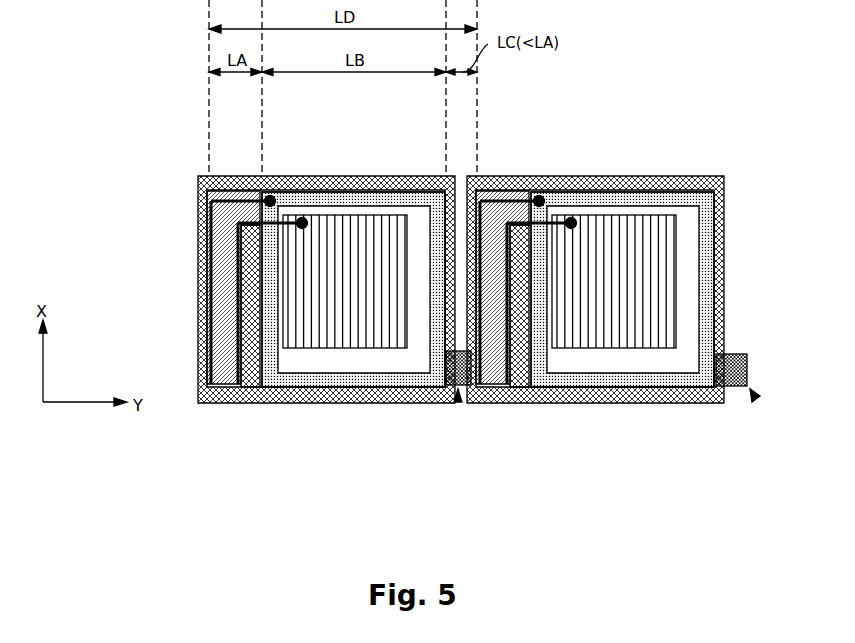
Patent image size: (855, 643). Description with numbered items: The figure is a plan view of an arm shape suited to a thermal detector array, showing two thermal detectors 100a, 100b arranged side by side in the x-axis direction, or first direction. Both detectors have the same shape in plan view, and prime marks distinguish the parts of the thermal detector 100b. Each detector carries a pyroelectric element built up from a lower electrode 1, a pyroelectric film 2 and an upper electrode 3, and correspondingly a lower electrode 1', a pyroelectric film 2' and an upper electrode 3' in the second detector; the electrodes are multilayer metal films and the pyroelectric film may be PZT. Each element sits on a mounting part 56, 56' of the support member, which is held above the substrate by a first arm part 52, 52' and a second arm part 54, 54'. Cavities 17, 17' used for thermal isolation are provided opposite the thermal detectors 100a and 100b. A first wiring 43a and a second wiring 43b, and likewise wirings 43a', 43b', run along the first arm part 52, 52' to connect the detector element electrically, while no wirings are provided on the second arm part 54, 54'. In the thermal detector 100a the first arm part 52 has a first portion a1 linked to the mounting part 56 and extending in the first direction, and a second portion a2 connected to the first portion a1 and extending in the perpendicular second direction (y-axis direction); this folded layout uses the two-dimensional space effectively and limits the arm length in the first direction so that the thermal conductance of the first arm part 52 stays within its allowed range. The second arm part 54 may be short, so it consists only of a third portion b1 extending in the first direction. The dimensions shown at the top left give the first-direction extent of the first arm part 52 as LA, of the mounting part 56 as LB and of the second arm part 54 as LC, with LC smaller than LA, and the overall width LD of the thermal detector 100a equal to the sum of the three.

The thermal detector 100a is at (287, 293).
The thermal detector 100b is at (602, 295).
The lower electrode 1 is at (353, 260).
The pyroelectric film 2 is at (345, 240).
The upper electrode 3 is at (346, 240).
The lower electrode 1' is at (622, 261).
The pyroelectric film 2' is at (614, 241).
The upper electrode 3' is at (615, 241).
The cavity 17 is at (353, 341).
The cavity 17' is at (622, 344).
The first wiring 43a is at (191, 287).
The second wiring 43b is at (250, 352).
The first wiring 43a' is at (486, 337).
The second wiring 43b' is at (545, 352).
The first arm part 52 is at (212, 347).
The first arm part 52' is at (507, 347).
The second arm part 54 is at (435, 421).
The second arm part 54' is at (739, 425).
The mounting part 56 is at (326, 335).
The mounting part 56' is at (595, 336).
The first portion a1 is at (243, 180).
The second portion a2 is at (206, 282).
The third portion b1 is at (458, 402).